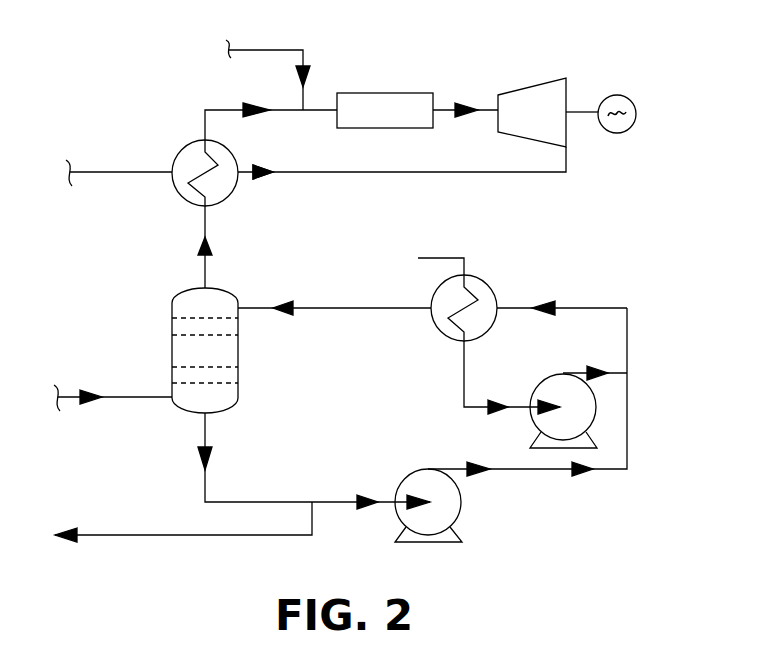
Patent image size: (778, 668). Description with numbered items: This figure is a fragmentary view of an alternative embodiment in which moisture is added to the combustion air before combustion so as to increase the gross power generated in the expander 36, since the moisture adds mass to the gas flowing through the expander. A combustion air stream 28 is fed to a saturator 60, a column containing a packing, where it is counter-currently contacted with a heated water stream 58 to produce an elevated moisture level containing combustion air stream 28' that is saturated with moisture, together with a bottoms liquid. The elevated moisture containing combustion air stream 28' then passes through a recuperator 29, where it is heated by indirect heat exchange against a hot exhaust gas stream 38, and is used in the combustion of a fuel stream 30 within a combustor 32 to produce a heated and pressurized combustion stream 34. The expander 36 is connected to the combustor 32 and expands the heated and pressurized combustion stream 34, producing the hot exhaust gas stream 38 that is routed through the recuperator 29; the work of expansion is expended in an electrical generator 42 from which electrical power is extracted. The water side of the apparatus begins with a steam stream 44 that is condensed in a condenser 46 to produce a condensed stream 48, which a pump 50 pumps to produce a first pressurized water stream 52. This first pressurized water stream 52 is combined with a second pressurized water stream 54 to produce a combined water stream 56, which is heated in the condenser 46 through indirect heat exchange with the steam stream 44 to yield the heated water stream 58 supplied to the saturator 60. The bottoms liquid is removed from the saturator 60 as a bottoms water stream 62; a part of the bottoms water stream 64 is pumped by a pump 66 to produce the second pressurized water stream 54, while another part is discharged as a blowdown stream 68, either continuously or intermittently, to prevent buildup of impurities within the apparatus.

The combustion air stream 28 is at (113, 427).
The elevated moisture level containing combustion air stream 28' is at (238, 247).
The recuperator 29 is at (230, 157).
The fuel stream 30 is at (303, 50).
The combustor 32 is at (390, 120).
The heated and pressurized combustion stream 34 is at (462, 100).
The expander 36 is at (530, 130).
The hot exhaust gas stream 38 is at (525, 172).
The electrical generator 42 is at (621, 100).
The steam stream 44 is at (444, 257).
The condenser 46 is at (447, 327).
The condensed stream 48 is at (460, 405).
The pump 50 is at (556, 388).
The first pressurized water stream 52 is at (612, 378).
The second pressurized water stream 54 is at (607, 470).
The combined water stream 56 is at (627, 325).
The heated water stream 58 is at (343, 308).
The saturator 60 is at (232, 345).
The bottoms water stream 62 is at (253, 502).
The part of the bottoms water stream 64 is at (342, 502).
The pump 66 is at (430, 522).
The blowdown stream 68 is at (187, 535).